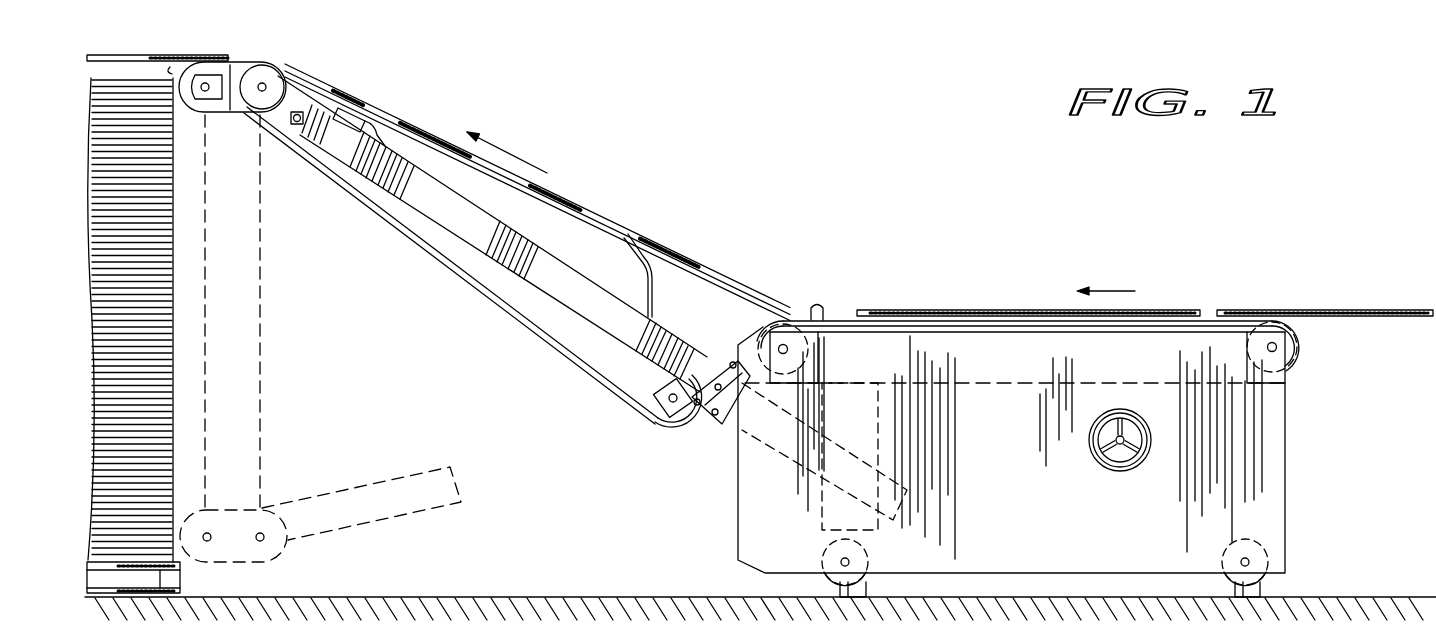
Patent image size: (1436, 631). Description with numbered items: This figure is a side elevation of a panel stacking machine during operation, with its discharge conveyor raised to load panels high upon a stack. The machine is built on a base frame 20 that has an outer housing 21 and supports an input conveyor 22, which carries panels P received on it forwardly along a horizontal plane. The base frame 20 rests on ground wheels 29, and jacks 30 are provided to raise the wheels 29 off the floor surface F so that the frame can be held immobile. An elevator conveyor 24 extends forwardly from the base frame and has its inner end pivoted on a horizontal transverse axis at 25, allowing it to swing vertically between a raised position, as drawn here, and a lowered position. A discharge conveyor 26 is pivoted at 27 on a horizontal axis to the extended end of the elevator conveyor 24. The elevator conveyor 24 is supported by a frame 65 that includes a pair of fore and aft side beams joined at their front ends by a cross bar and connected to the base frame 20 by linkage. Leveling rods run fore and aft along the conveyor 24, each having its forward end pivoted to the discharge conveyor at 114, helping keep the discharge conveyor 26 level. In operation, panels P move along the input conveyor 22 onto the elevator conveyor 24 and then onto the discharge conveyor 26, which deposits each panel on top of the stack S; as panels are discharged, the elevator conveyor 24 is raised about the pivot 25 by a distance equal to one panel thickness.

The base frame 20 is at (1085, 425).
The outer housing 21 is at (1268, 430).
The input conveyor 22 is at (1300, 347).
The elevator conveyor 24 is at (504, 242).
The pivot axis 25 is at (790, 349).
The discharge conveyor 26 is at (247, 115).
The pivot 27 is at (285, 70).
The ground wheels 29 is at (1262, 585).
The jacks 30 is at (862, 590).
The frame 65 is at (588, 323).
The pivot 114 is at (297, 124).
The stack S is at (167, 460).
The panels P is at (1262, 310).
The floor surface F is at (1352, 597).